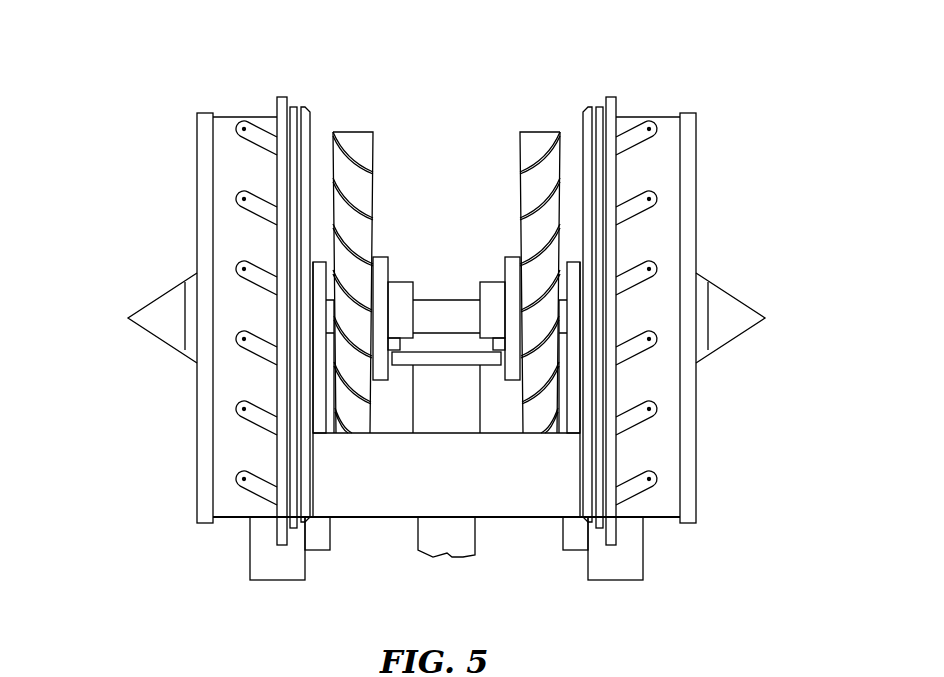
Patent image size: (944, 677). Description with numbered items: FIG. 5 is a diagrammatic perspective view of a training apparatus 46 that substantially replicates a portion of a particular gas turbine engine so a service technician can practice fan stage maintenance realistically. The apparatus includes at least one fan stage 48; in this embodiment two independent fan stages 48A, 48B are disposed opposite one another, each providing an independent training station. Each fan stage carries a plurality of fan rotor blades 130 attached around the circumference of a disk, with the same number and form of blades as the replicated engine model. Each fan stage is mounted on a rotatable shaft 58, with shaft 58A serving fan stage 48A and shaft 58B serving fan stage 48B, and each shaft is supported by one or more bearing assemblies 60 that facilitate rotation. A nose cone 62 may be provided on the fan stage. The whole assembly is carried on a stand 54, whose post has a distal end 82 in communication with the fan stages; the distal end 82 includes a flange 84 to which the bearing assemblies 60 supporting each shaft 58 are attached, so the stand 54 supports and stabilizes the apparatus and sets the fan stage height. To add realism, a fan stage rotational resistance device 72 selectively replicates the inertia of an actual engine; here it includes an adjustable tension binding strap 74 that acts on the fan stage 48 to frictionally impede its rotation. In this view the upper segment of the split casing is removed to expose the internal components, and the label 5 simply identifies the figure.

The training apparatus 46 is at (230, 77).
The fan stage 48 is at (450, 334).
The first fan stage 48A is at (174, 146).
The second fan stage 48B is at (716, 154).
The rotatable shaft 58 is at (446, 292).
The shaft for first fan stage 58A is at (380, 312).
The shaft for second fan stage 58B is at (513, 312).
The bearing assembly 60 is at (492, 293).
The nose cone 62 is at (165, 325).
The fan rotor blade 130 is at (357, 130).
The distal end 82 is at (410, 393).
The flange 84 is at (448, 358).
The adjustable tension binding strap 74 is at (277, 538).
The fan stage rotational resistance device 72 is at (238, 588).
The stand 54 is at (405, 565).
The frame 5 is at (513, 519).